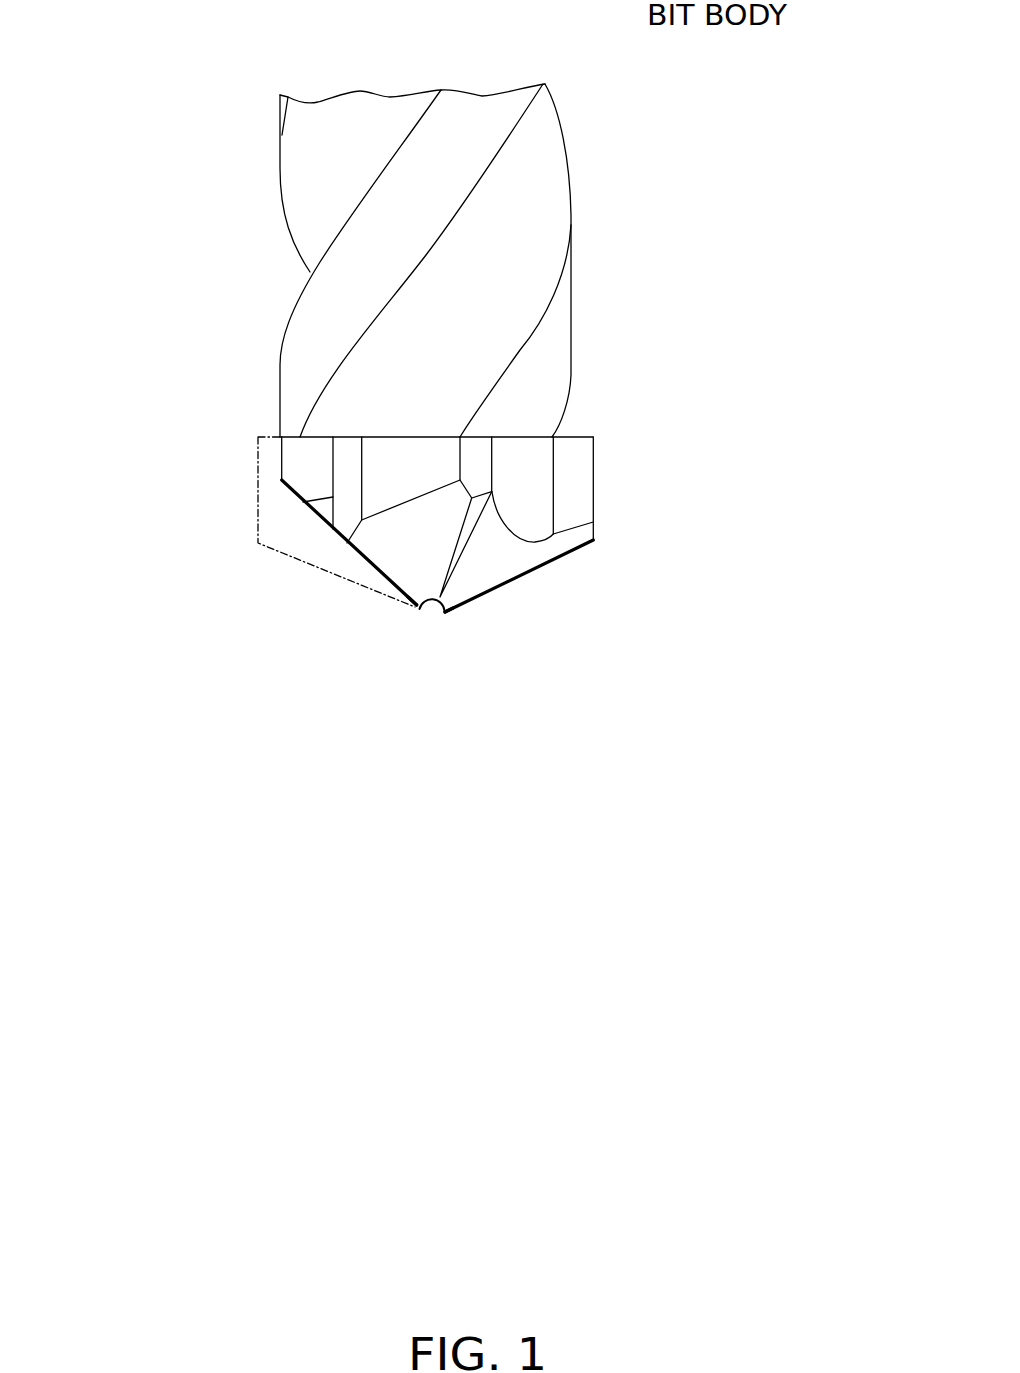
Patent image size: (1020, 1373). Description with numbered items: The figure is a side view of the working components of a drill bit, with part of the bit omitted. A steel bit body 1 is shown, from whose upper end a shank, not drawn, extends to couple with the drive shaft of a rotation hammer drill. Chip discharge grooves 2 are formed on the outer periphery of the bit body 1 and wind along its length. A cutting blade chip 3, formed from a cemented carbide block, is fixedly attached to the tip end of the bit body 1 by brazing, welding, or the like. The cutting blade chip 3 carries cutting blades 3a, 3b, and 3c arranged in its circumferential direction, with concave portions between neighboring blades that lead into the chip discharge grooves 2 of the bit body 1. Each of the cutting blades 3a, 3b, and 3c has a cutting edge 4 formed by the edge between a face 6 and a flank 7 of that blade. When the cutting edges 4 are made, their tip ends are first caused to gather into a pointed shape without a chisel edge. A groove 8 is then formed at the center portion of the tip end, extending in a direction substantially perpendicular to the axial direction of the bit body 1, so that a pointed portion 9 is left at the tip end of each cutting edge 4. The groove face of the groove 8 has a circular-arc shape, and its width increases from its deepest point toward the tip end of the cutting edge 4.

The bit body 1 is at (571, 103).
The chip discharge grooves 2 is at (527, 206).
The cutting blade chip 3 is at (572, 437).
The cutting blade 3a is at (580, 480).
The cutting blade 3b is at (347, 467).
The cutting blade 3c is at (282, 458).
The cutting edge 4 is at (373, 567).
The face 6 is at (515, 553).
The flank 7 is at (415, 525).
The groove 8 is at (430, 607).
The pointed portion 9 is at (420, 613).